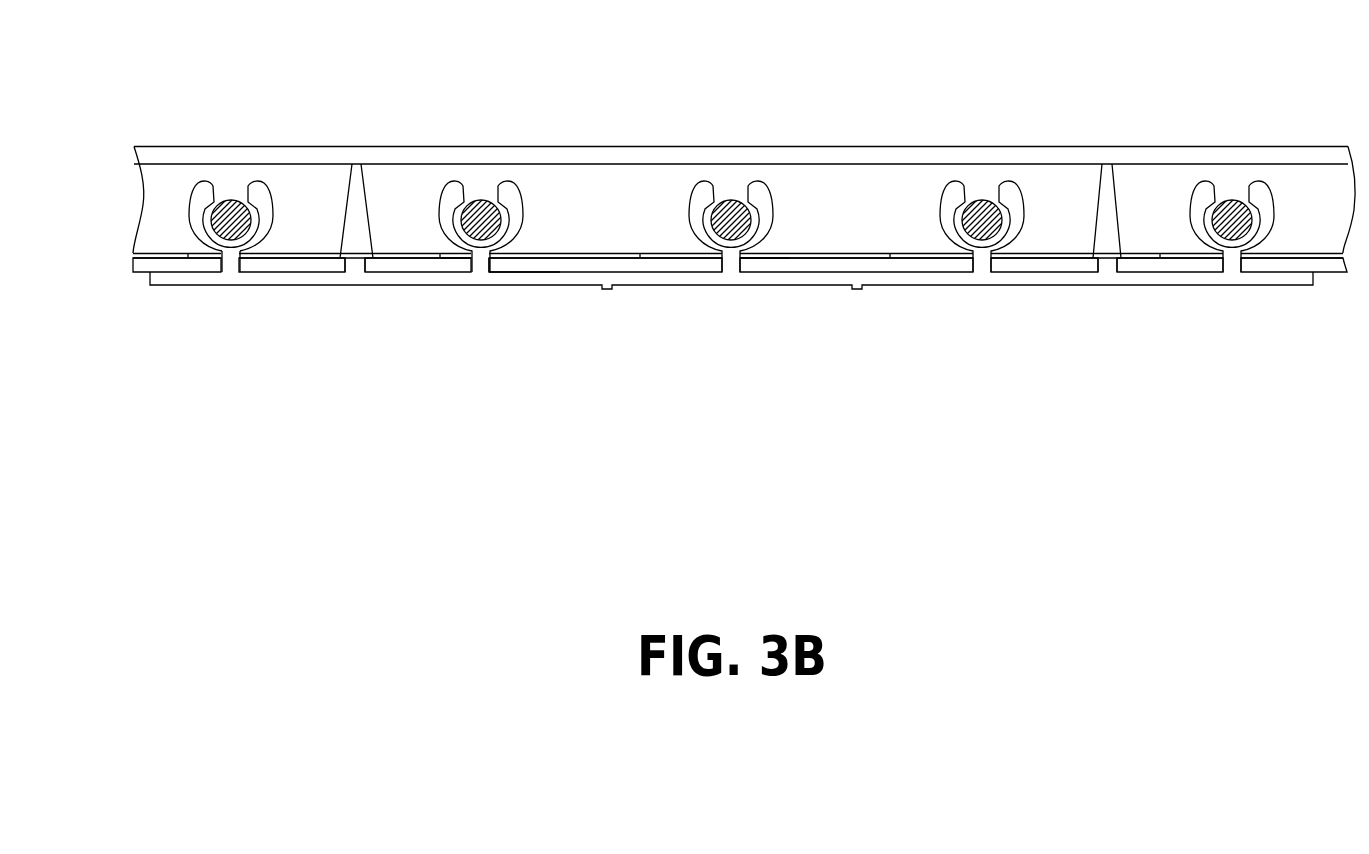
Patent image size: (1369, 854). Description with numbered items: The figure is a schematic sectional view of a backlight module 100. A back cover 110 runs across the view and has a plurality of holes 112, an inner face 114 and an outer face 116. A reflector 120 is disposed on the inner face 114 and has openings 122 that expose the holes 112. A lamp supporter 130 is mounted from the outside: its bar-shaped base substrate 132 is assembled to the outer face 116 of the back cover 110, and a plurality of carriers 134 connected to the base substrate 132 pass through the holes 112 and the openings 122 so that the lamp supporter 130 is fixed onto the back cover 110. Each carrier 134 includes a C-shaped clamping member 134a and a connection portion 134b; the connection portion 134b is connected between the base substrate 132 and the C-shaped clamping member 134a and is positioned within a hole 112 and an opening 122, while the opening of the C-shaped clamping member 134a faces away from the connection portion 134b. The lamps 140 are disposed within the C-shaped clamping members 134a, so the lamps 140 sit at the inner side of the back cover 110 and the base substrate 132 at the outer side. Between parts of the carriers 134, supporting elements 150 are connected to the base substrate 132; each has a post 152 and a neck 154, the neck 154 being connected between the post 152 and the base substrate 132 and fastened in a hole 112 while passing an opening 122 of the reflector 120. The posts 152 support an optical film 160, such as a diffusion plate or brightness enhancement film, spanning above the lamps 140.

The backlight module 100 is at (1283, 487).
The back cover 110 is at (576, 268).
The holes 112 is at (488, 264).
The inner face 114 is at (462, 258).
The outer face 116 is at (527, 273).
The reflector 120 is at (647, 256).
The openings 122 is at (766, 258).
The lamp supporter 130 is at (338, 428).
The base substrate 132 is at (182, 278).
The carriers 134 is at (368, 384).
The C-shaped clamping member 134a is at (266, 236).
The connection portion 134b is at (229, 266).
The lamps 140 is at (983, 240).
The supporting elements 150 is at (1142, 385).
The post 152 is at (1098, 211).
The neck 154 is at (1107, 267).
The optical film 160 is at (1167, 156).